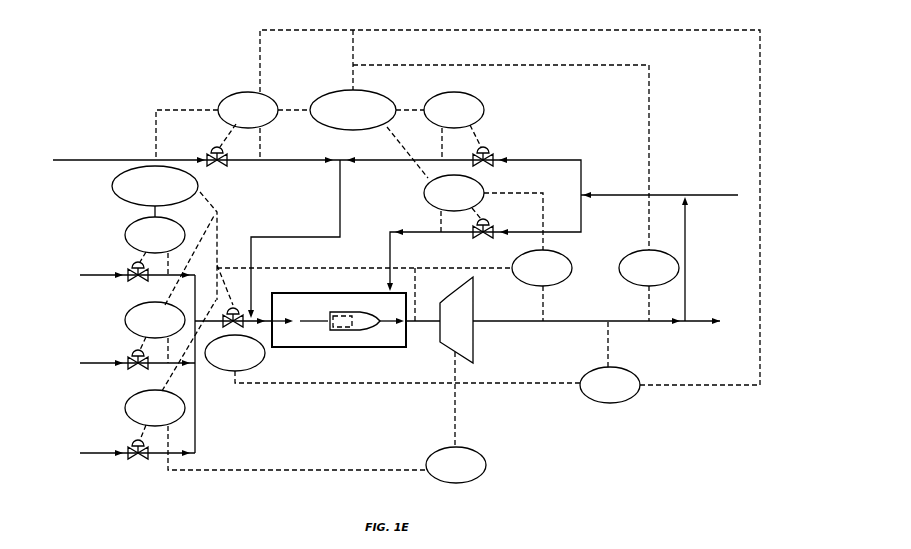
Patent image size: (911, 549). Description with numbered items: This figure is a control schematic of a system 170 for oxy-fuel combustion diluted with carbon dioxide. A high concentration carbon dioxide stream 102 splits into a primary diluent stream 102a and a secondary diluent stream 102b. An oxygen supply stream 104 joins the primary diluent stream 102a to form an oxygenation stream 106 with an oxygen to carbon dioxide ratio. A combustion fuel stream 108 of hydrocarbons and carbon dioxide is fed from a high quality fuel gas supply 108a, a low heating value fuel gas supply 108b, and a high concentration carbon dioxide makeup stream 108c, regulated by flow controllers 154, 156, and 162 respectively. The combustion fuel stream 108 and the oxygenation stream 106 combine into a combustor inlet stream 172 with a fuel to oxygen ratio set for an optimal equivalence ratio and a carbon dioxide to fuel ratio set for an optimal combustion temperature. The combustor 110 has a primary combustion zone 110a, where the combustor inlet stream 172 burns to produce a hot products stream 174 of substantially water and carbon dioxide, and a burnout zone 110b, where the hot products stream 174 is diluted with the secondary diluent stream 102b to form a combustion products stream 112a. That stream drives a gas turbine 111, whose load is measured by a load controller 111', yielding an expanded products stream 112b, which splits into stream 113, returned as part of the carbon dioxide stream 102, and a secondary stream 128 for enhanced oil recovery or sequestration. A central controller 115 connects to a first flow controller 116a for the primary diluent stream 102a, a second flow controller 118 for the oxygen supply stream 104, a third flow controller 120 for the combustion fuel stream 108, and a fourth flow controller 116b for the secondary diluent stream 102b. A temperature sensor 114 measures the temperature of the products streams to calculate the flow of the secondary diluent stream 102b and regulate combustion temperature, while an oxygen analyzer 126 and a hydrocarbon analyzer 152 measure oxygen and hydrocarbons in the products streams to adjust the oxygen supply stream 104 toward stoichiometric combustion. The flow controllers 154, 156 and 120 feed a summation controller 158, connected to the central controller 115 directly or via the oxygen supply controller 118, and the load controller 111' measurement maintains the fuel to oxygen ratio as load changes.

The system 170 is at (79, 29).
The oxygen supply stream 104 is at (86, 160).
The high concentration carbon dioxide stream 102 is at (631, 195).
The primary diluent stream 102a is at (551, 160).
The secondary diluent stream 102b is at (571, 232).
The oxygenation stream 106 is at (304, 237).
The combustion fuel stream 108 is at (202, 332).
The high quality fuel gas supply 108a is at (98, 275).
The low heating value fuel gas supply 108b is at (98, 363).
The high concentration carbon dioxide makeup stream 108c is at (98, 453).
The combustor 110 is at (300, 293).
The primary combustion zone 110a is at (281, 337).
The burnout zone 110b is at (377, 312).
The gas turbine 111 is at (477, 320).
The load controller 111' is at (456, 417).
The combustion products stream 112a is at (428, 325).
The expanded products stream 112b is at (513, 322).
The stream 113 is at (688, 255).
The temperature sensor 114 is at (542, 285).
The central controller 115 is at (479, 104).
The first flow controller 116a is at (454, 126).
The fourth flow controller 116b is at (483, 212).
The second flow controller 118 is at (233, 126).
The third flow controller 120 is at (392, 325).
The oxygen analyzer 126 is at (649, 193).
The secondary stream 128 is at (697, 322).
The hydrocarbon analyzer 152 is at (610, 362).
The flow controller 154 is at (155, 246).
The flow controller 156 is at (155, 332).
The summation controller 158 is at (172, 278).
The flow controller 162 is at (275, 430).
The combustor inlet stream 172 is at (279, 332).
The hot products stream 174 is at (385, 330).